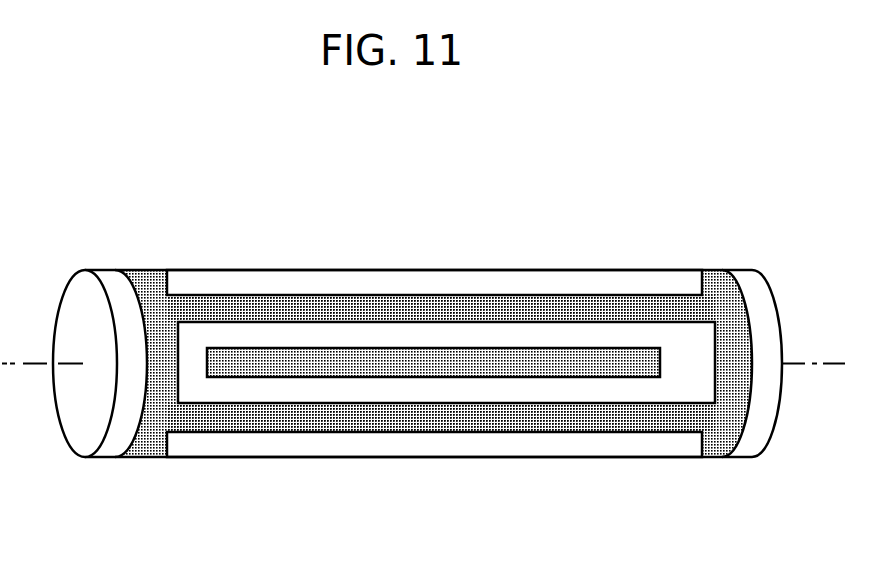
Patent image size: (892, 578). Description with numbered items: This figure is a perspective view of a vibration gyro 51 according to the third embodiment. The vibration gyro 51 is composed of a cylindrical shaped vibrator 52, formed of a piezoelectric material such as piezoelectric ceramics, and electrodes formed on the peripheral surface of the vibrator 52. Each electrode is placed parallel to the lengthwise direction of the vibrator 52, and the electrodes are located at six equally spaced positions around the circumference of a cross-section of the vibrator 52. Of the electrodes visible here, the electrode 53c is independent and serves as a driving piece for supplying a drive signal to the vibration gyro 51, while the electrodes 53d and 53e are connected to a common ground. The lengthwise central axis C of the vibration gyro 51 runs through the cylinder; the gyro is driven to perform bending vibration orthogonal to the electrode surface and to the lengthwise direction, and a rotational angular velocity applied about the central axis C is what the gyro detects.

The vibration gyro 51 is at (442, 226).
The vibrator 52 is at (72, 382).
The electrode 53c is at (535, 367).
The electrode 53d is at (352, 418).
The electrode 53e is at (580, 307).
The lengthwise central axis C is at (33, 362).